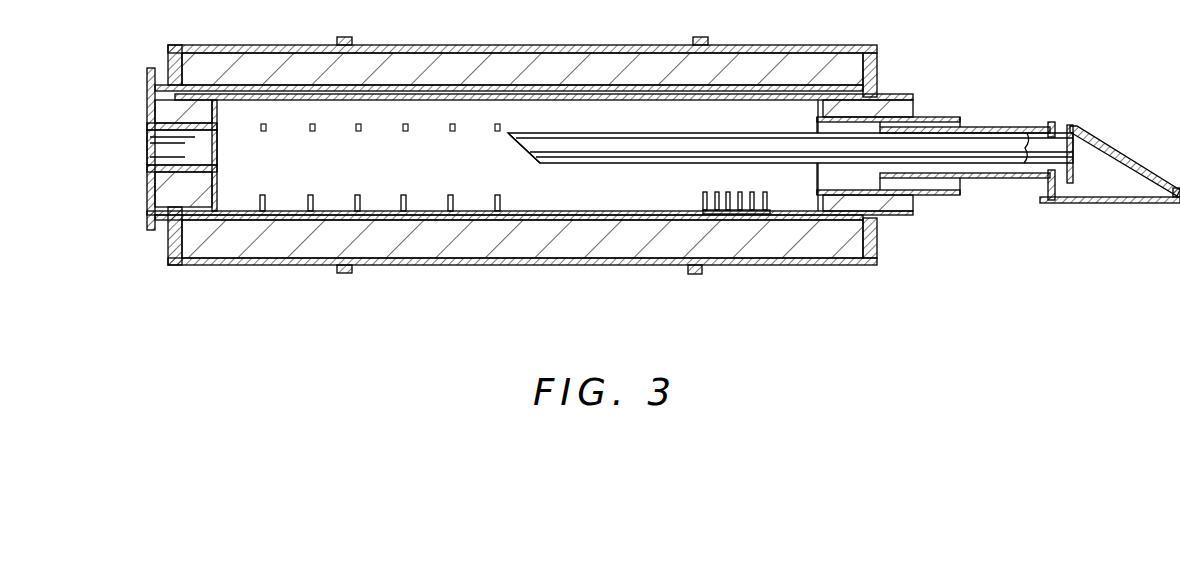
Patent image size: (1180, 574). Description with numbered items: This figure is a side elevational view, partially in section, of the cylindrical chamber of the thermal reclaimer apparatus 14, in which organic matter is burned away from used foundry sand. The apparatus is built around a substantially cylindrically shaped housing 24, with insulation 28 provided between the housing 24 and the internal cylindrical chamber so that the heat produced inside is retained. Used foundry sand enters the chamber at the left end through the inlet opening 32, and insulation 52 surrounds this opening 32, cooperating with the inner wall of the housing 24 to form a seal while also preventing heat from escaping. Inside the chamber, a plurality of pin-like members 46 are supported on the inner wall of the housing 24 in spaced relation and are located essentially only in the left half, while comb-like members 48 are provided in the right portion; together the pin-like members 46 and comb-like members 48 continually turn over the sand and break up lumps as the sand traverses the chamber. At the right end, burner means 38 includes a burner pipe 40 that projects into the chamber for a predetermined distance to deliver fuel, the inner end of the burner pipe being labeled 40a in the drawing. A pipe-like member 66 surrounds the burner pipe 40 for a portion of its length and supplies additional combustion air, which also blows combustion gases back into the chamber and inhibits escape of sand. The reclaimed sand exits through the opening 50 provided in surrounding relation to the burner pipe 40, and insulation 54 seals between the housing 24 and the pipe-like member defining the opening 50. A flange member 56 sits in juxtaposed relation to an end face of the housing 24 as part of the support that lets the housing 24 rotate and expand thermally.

The thermal reclaimer apparatus 14 is at (552, 44).
The cylindrically shaped housing 24 is at (388, 47).
The insulation 28 is at (448, 62).
The inlet opening 32 is at (207, 148).
The insulation 52 is at (213, 174).
The pin-like members 46 is at (361, 195).
The comb-like members 48 is at (705, 193).
The burner pipe 40 is at (735, 131).
The tapered tip of tube 40a is at (533, 156).
The flange member 56 is at (878, 88).
The insulation 54 is at (868, 222).
The opening 50 is at (957, 187).
The pipe-like member 66 is at (1003, 128).
The burner means 38 is at (1113, 152).